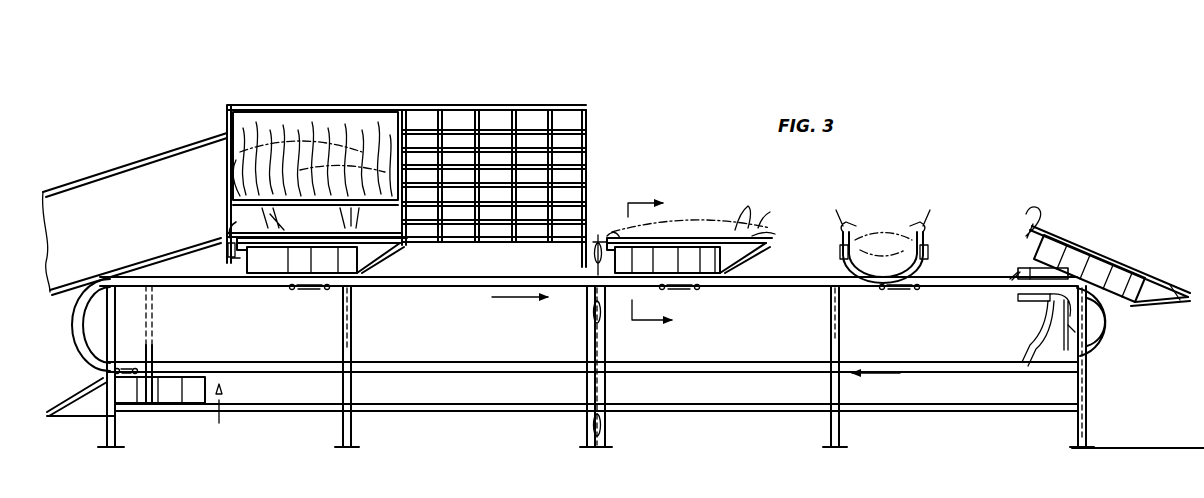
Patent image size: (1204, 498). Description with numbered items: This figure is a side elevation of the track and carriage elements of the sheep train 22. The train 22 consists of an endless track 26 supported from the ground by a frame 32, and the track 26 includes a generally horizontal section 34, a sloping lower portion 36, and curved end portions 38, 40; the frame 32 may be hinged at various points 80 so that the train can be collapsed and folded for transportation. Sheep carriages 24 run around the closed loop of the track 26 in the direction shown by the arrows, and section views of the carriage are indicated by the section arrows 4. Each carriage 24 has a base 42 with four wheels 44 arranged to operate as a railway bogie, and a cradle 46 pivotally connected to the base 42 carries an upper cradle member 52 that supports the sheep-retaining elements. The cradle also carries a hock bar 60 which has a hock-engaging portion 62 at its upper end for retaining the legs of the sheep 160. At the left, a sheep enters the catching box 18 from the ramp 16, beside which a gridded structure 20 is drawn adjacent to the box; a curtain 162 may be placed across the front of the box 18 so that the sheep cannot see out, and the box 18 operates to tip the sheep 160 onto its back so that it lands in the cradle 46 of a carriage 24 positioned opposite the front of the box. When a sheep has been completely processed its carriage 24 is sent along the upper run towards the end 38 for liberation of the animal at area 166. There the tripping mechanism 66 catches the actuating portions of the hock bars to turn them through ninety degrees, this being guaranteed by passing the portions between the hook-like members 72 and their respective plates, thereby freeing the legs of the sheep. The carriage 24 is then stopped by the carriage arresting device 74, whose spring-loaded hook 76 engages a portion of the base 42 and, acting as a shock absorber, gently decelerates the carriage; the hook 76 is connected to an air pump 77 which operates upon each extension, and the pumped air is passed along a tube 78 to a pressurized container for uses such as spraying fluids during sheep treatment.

The ramp 16 is at (126, 158).
The catching box 18 is at (238, 102).
The curtain 162 is at (258, 113).
The sheep 160 is at (293, 130).
The grid rack 20 is at (515, 98).
The sheep train 22 is at (955, 267).
The horizontal section 34 is at (465, 284).
The curved end portion 40 is at (88, 300).
The frame 32 is at (352, 428).
The sloping lower portion 36 is at (712, 358).
The area 166 is at (1148, 447).
The hinge points 80 is at (352, 340).
The sheep carriage 24 is at (192, 357).
The cradle 46 is at (160, 392).
The wheels 44 is at (160, 370).
The base 42 is at (310, 290).
The hock-engaging portion 62 is at (224, 230).
The hock bar 60 is at (599, 237).
The section view direction 4 is at (650, 261).
The endless track 26 is at (780, 267).
The tripping mechanism 66 is at (1017, 263).
The upper cradle member 52 is at (1137, 257).
The curved end portion 38 is at (1113, 333).
The hook-like member 72 is at (1012, 280).
The air pump 77 is at (1022, 300).
The spring-loaded hook 76 is at (1067, 297).
The tube 78 is at (1032, 343).
The carriage arresting device 74 is at (1070, 327).